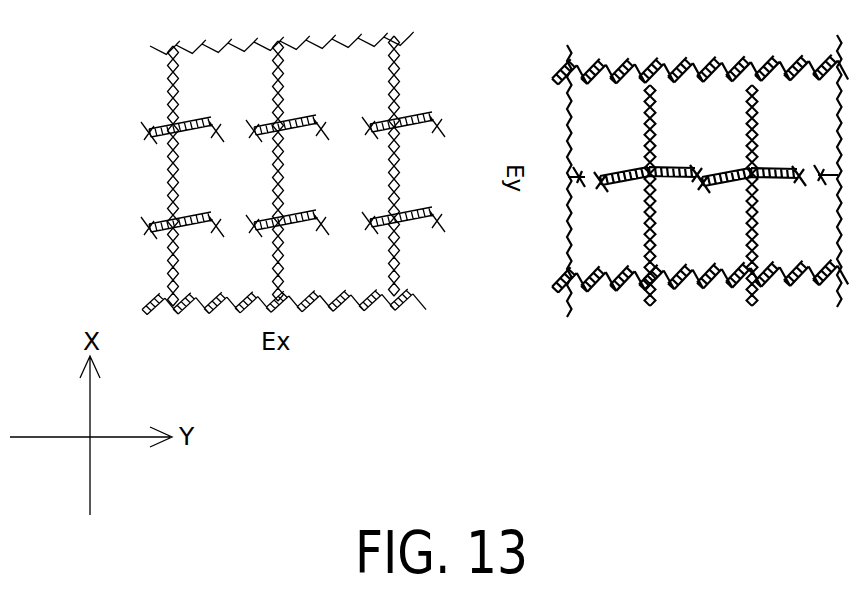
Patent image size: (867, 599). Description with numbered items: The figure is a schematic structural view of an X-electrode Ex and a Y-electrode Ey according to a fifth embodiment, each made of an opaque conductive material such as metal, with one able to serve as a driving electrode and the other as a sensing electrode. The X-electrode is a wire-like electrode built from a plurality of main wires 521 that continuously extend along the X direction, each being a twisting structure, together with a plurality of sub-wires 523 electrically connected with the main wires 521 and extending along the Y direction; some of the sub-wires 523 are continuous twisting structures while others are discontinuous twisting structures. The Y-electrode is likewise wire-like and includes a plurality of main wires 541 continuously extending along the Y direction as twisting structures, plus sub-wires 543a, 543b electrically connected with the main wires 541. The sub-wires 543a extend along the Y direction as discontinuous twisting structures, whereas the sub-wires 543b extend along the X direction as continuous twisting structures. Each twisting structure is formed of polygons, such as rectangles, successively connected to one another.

The main wires 521 is at (166, 76).
The sub-wires 523 is at (218, 124).
The main wires 541 is at (625, 68).
The sub-wires 543a is at (600, 174).
The sub-wires 543b is at (565, 127).